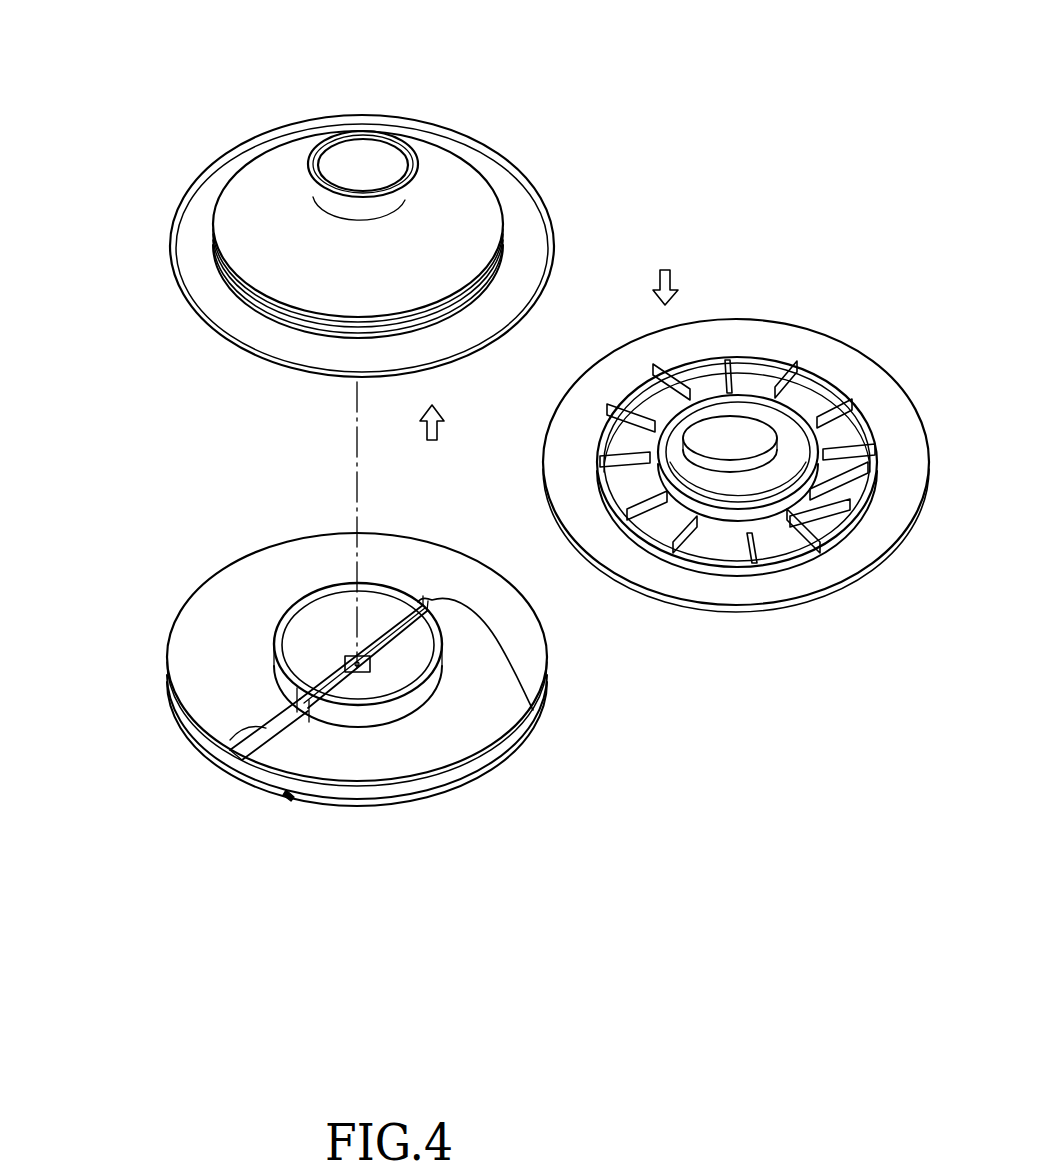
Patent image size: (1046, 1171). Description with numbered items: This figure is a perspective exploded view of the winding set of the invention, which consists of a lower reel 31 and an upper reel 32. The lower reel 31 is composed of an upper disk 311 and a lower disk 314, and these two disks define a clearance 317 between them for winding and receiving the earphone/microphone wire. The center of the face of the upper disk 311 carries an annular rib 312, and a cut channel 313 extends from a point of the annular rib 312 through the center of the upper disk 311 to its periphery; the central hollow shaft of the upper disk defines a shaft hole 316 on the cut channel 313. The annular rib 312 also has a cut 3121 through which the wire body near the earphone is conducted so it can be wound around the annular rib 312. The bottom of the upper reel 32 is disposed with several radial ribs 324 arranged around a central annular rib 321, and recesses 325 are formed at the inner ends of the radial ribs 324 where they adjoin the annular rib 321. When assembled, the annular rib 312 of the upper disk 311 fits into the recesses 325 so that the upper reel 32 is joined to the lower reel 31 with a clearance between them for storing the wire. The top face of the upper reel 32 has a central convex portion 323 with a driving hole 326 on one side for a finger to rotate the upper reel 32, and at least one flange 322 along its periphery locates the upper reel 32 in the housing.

The lower reel 31 is at (315, 703).
The upper disk 311 is at (385, 780).
The annular rib 312 is at (273, 650).
The cut channel 313 is at (236, 740).
The lower disk 314 is at (447, 790).
The shaft hole 316 is at (350, 662).
The clearance 317 is at (289, 795).
The cut 3121 is at (533, 710).
The upper reel 32 is at (414, 188).
The annular rib 321 is at (685, 485).
The flange 322 is at (507, 232).
The central convex portion 323 is at (455, 193).
The radial ribs 324 is at (838, 508).
The recesses 325 is at (648, 495).
The driving hole 326 is at (362, 163).